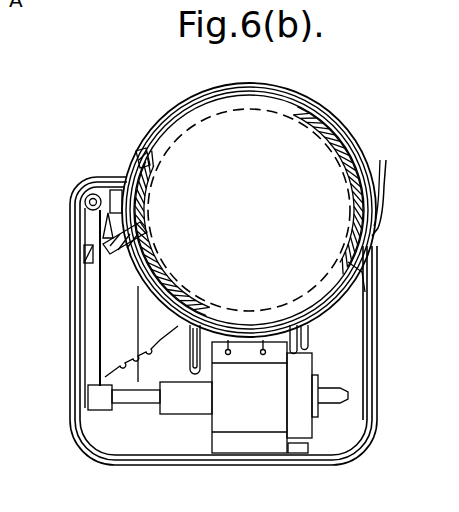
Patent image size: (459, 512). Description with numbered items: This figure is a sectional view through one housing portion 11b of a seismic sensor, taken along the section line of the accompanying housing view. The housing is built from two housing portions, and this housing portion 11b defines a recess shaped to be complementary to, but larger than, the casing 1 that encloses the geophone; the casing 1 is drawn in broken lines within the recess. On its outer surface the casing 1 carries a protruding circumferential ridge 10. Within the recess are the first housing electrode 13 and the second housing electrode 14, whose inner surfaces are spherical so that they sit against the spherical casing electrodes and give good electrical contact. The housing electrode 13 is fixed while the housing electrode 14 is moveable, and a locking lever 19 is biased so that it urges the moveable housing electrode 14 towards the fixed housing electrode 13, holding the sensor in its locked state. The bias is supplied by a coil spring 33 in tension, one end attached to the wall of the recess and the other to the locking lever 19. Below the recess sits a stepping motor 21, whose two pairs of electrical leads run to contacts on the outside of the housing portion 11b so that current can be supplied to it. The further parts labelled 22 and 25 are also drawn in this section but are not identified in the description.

The casing 1 is at (270, 128).
The protruding circumferential ridge 10 is at (213, 97).
The housing shell layers 25 is at (178, 112).
The first housing electrode 13 is at (340, 146).
The second housing electrode 14 is at (136, 164).
The housing portion 11b is at (385, 174).
The locking lever 19 is at (96, 363).
The coil spring 33 is at (110, 358).
The actuator cylinder 22 is at (127, 400).
The stepping motor 21 is at (223, 412).